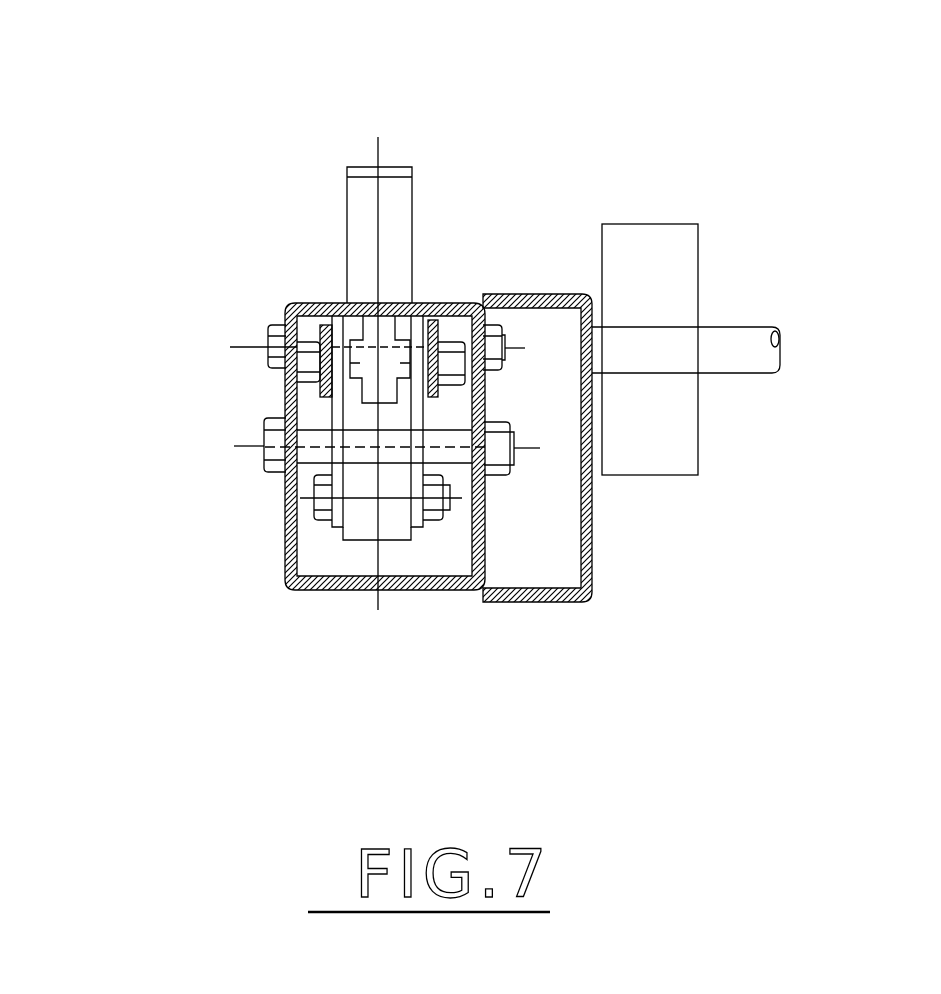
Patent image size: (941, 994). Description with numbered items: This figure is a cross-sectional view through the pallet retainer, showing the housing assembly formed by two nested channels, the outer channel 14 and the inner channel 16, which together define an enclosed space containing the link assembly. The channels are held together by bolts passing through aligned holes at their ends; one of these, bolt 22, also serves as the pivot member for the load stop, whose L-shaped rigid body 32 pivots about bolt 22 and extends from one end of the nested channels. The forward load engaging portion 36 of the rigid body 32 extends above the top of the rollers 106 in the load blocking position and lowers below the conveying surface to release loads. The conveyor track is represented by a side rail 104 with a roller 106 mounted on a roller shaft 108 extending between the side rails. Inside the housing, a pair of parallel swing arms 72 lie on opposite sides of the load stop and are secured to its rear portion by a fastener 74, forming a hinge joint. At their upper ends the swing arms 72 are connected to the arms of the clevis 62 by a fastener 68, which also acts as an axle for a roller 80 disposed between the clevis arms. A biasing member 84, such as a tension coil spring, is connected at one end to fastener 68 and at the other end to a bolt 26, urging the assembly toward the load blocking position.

The outer channel 14 is at (280, 472).
The inner channel 16 is at (677, 545).
The bolt 22 is at (296, 488).
The bolt 26 is at (340, 273).
The rigid body 32 is at (428, 425).
The load engaging portion 36 is at (471, 178).
The clevis 62 is at (396, 245).
The fastener 68 is at (265, 396).
The swing arms 72 is at (404, 519).
The fastener 74 is at (304, 593).
The roller 80 is at (331, 208).
The biasing member 84 is at (599, 365).
The side rails 104 is at (706, 600).
The rollers 106 is at (754, 349).
The roller shafts 108 is at (762, 423).